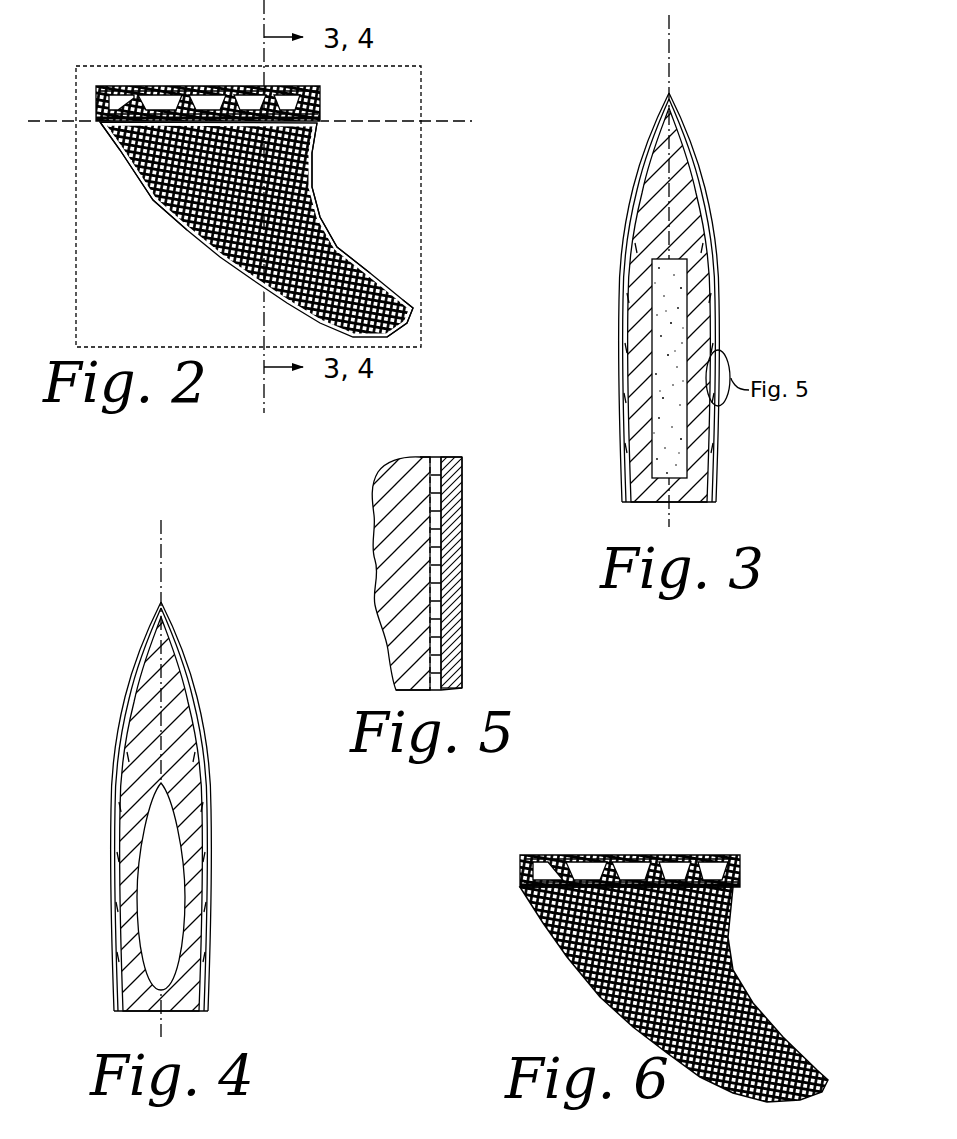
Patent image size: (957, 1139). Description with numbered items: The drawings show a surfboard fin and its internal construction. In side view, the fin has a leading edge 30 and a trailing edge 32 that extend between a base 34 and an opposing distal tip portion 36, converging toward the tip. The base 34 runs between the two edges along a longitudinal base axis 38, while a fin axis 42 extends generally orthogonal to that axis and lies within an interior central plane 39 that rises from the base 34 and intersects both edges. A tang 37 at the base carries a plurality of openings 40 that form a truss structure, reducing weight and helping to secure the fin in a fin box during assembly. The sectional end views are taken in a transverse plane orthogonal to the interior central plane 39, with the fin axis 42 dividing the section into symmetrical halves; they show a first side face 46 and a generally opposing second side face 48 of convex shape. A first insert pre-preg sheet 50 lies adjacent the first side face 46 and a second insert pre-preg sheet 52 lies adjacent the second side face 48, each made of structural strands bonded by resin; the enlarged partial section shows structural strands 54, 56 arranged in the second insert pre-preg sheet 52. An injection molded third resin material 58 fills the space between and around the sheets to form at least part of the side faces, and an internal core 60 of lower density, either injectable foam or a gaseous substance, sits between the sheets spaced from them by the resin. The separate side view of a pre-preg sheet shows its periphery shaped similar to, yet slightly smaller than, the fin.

In FIG. 2, the leading edge 30 is at (170, 229).
In FIG. 2, the trailing edge 32 is at (327, 228).
In FIG. 2, the base 34 is at (127, 139).
In FIG. 2, the distal tip portion 36 is at (412, 310).
In FIG. 2, the tang 37 is at (208, 76).
In FIG. 2, the longitudinal base axis 38 is at (446, 121).
In FIG. 2, the interior central plane 39 is at (421, 162).
In FIG. 3, the interior central plane 39 is at (632, 270).
In FIG. 4, the interior central plane 39 is at (123, 778).
In FIG. 2, the openings 40 is at (201, 97).
In FIG. 2, the fin axis 42 is at (264, 400).
In FIG. 3, the fin axis 42 is at (669, 40).
In FIG. 4, the fin axis 42 is at (161, 546).
In FIG. 3, the first side face 46 is at (635, 300).
In FIG. 4, the first side face 46 is at (127, 809).
In FIG. 3, the second side face 48 is at (707, 300).
In FIG. 4, the second side face 48 is at (200, 809).
In FIG. 5, the second side face 48 is at (458, 656).
In FIG. 3, the first insert pre-preg sheet 50 is at (609, 297).
In FIG. 4, the first insert pre-preg sheet 50 is at (100, 806).
In FIG. 6, the first insert pre-preg sheet 50 is at (674, 942).
In FIG. 3, the second insert pre-preg sheet 52 is at (706, 297).
In FIG. 4, the second insert pre-preg sheet 52 is at (198, 806).
In FIG. 5, the second insert pre-preg sheet 52 is at (449, 600).
In FIG. 6, the second insert pre-preg sheet 52 is at (598, 848).
In FIG. 5, the structural strands 54 is at (463, 470).
In FIG. 5, the structural strands 56 is at (444, 547).
In FIG. 3, the injection molded third resin material 58 is at (653, 305).
In FIG. 4, the injection molded third resin material 58 is at (144, 814).
In FIG. 5, the injection molded third resin material 58 is at (375, 487).
In FIG. 3, the internal core 60 is at (607, 368).
In FIG. 4, the internal core 60 is at (102, 886).